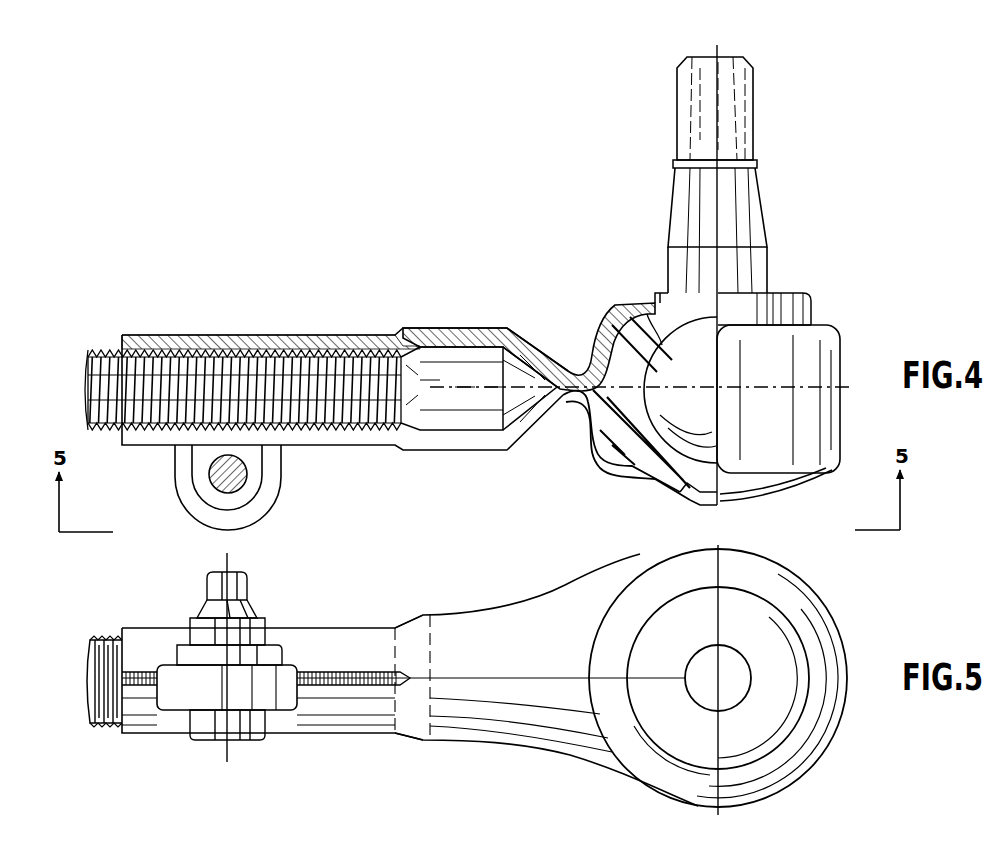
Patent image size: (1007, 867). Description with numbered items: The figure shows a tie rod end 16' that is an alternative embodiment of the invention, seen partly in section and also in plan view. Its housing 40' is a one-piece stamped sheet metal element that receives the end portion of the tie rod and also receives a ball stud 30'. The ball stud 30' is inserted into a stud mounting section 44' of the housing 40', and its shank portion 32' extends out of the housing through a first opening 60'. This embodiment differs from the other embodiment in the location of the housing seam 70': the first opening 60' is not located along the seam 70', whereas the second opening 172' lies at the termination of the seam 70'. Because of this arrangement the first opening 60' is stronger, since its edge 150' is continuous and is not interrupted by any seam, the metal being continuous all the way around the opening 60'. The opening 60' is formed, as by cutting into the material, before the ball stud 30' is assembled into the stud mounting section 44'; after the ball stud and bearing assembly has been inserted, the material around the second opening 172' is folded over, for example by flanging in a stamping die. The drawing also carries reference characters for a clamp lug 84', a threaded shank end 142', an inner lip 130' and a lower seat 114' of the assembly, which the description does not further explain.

In FIG. 4, the tie rod end 16' is at (266, 280).
In FIG. 5, the tie rod end 16' is at (246, 630).
In FIG. 4, the housing 40' is at (388, 340).
In FIG. 5, the housing 40' is at (410, 665).
In FIG. 4, the first opening 60' is at (643, 282).
In FIG. 4, the shank portion 32' is at (768, 175).
In FIG. 4, the ball stud 30' is at (760, 345).
In FIG. 4, the stud mounting section 44' is at (817, 381).
In FIG. 4, the clamp lug 84' is at (276, 481).
In FIG. 4, the threaded shank end 142' is at (479, 418).
In FIG. 4, the inner boot lip 130' is at (610, 441).
In FIG. 4, the lower bearing seat 114' is at (628, 410).
In FIG. 4, the edge 150' is at (680, 506).
In FIG. 5, the edge 150' is at (700, 671).
In FIG. 4, the second opening 172' is at (772, 499).
In FIG. 5, the second opening 172' is at (753, 678).
In FIG. 5, the seam 70' is at (449, 659).